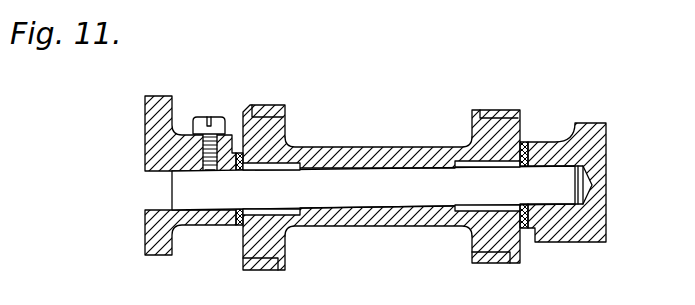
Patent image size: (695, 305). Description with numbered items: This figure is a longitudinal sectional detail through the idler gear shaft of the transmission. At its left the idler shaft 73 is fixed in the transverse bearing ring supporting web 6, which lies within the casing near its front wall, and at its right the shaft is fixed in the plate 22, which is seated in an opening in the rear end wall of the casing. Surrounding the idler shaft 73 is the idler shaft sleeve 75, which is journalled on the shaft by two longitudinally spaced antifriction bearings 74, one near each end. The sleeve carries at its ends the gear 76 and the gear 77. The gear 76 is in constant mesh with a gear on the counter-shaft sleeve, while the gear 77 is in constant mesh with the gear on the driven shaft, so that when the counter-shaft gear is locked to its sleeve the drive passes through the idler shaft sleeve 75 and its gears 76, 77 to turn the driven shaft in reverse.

The bearing ring supporting web 6 is at (148, 233).
The plate 22 is at (549, 242).
The idler shaft 73 is at (377, 188).
The antifriction bearings 74 is at (263, 168).
The idler shaft sleeve 75 is at (378, 126).
The gear 76 is at (266, 106).
The gear 77 is at (501, 109).